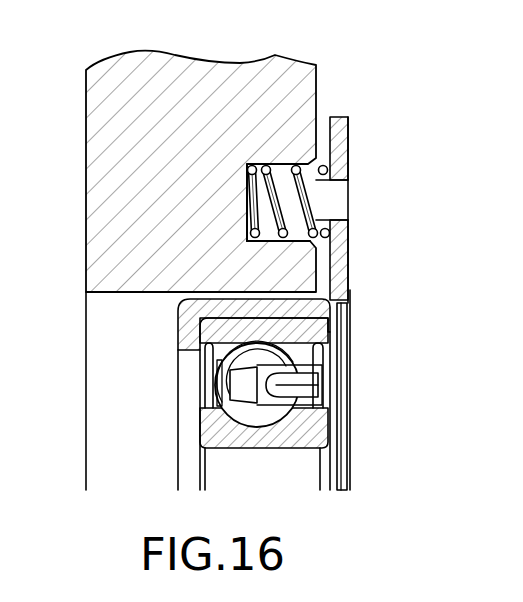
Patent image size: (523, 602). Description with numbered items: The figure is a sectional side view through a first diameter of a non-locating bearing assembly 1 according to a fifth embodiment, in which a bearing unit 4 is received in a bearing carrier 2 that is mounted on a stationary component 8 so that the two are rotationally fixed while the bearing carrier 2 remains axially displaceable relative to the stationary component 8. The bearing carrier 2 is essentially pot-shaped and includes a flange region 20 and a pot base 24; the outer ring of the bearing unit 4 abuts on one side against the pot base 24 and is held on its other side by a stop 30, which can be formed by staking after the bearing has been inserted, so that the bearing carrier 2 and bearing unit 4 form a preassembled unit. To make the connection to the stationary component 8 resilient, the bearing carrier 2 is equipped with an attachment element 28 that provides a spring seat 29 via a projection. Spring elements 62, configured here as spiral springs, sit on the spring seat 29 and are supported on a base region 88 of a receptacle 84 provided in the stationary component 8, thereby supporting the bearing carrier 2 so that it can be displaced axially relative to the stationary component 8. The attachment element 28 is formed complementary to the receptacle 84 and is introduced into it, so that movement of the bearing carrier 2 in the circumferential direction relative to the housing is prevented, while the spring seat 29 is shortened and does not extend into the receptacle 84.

The non-locating bearing assembly 1 is at (220, 37).
The bearing carrier 2 is at (375, 182).
The bearing unit 4 is at (370, 405).
The stationary component 8 is at (112, 122).
The flange region 20 is at (337, 166).
The pot base 24 is at (178, 334).
The attachment element 28 is at (333, 210).
The spring seat 29 is at (330, 192).
The stop 30 is at (333, 323).
The spring element 62 is at (255, 232).
The receptacle 84 is at (236, 168).
The base region 88 is at (247, 199).